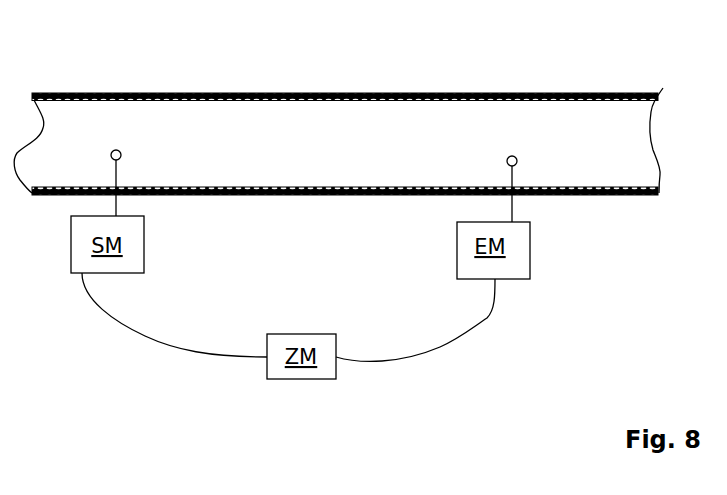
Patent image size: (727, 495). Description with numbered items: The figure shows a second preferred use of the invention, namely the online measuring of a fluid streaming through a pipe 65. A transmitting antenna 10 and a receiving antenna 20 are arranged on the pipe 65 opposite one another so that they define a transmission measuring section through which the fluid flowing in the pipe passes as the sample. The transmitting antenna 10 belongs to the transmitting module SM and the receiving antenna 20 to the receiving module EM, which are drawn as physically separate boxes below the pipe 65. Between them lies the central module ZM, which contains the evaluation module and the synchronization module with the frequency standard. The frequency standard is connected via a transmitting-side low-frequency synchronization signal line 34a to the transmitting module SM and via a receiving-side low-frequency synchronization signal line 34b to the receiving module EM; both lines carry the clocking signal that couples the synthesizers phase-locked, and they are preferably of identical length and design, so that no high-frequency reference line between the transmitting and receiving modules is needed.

The transmitting antenna 10 is at (113, 150).
The receiving antenna 20 is at (515, 157).
The pipe 65 is at (259, 95).
The transmitting-side low-frequency synchronization signal line 34a is at (143, 335).
The receiving-side low-frequency synchronization signal line 34b is at (465, 342).